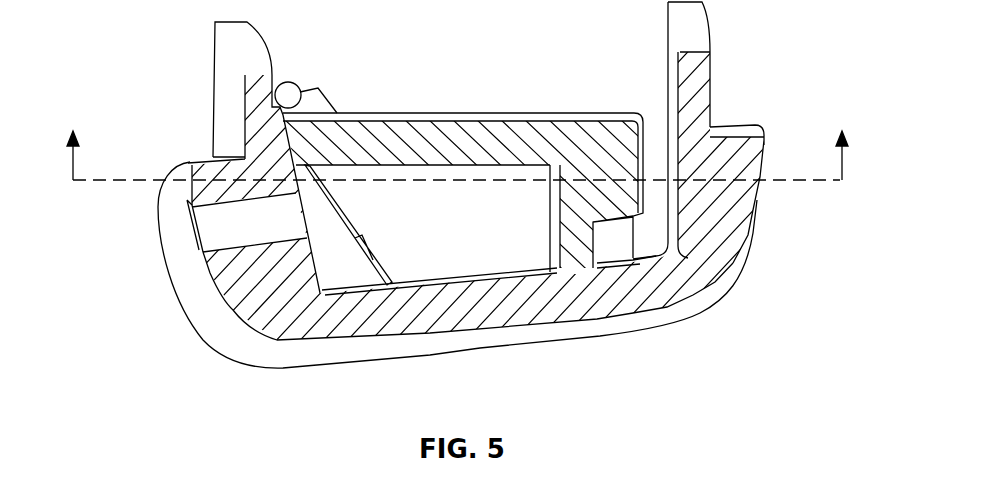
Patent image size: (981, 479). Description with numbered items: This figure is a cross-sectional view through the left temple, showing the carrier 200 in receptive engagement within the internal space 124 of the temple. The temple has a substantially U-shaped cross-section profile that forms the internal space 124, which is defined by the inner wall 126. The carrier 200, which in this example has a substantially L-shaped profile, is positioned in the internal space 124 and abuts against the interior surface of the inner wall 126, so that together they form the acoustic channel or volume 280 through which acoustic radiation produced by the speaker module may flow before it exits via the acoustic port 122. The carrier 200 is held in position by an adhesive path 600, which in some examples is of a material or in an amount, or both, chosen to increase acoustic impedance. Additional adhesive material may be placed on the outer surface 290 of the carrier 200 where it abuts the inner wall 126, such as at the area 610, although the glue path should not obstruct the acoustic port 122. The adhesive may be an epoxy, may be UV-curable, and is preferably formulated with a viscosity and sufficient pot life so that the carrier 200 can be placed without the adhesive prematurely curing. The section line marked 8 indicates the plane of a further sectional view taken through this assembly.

The carrier 200 is at (560, 112).
The outer surface 290 is at (380, 114).
The internal space 124 is at (446, 100).
The acoustic channel 280 is at (426, 236).
The inner wall 126 is at (672, 153).
The acoustic port 122 is at (184, 218).
The adhesive path 600 is at (342, 257).
The area 610 is at (294, 84).
The section line 8- 8 is at (458, 139).